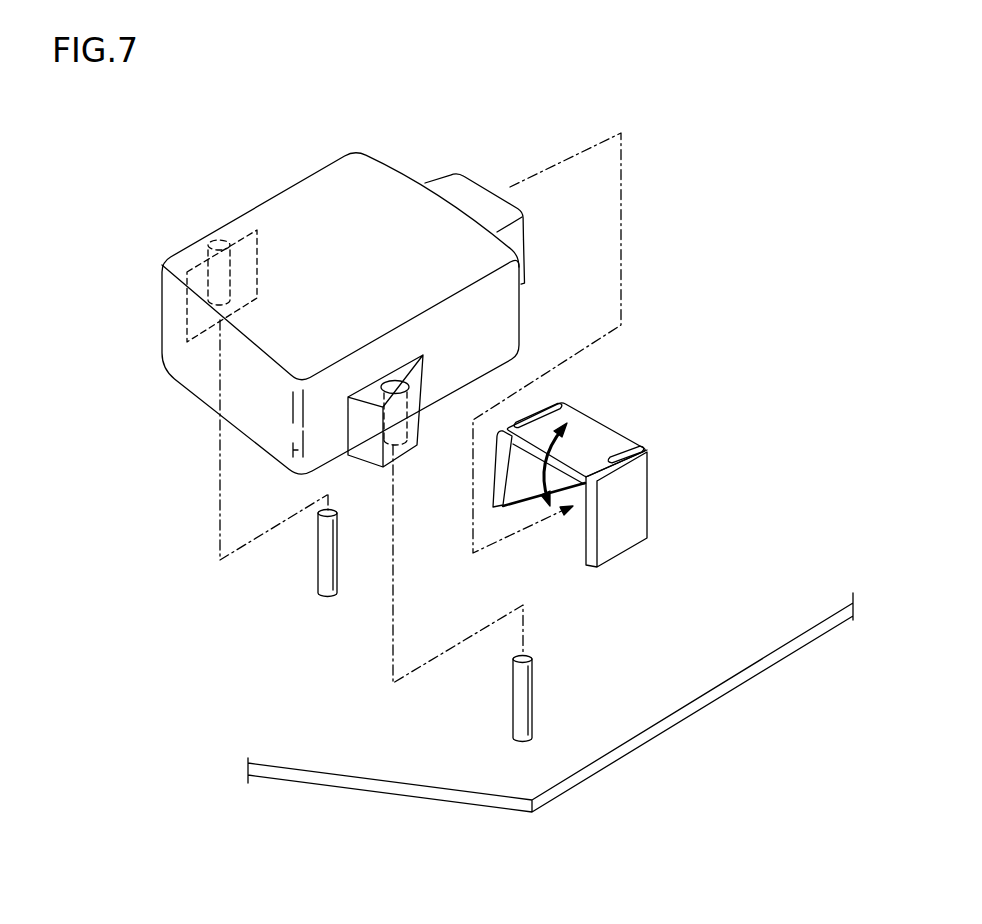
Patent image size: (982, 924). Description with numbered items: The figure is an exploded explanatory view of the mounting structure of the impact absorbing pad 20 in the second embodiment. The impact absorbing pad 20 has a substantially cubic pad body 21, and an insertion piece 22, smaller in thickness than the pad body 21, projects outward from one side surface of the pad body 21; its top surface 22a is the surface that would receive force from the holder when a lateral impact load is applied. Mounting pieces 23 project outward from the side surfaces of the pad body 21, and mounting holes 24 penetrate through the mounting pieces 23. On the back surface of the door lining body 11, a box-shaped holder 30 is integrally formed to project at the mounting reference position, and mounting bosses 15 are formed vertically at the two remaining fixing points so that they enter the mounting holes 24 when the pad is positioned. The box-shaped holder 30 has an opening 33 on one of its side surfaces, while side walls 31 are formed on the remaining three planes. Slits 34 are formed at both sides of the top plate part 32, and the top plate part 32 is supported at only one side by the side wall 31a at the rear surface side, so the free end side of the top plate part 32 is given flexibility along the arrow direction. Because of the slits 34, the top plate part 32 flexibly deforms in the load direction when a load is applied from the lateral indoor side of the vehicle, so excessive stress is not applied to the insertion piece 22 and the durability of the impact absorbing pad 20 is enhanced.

The door lining body 11 is at (653, 703).
The mounting boss 15 is at (320, 563).
The impact absorbing pad 20 is at (267, 190).
The pad body 21 is at (335, 247).
The insertion piece 22 is at (525, 238).
The top surface 22a is at (474, 190).
The mounting piece 23 is at (191, 270).
The mounting hole 24 is at (218, 240).
The box-shaped holder 30 is at (582, 451).
The side wall 31 is at (497, 477).
The side wall at the rear surface side 31a is at (614, 444).
The top plate part 32 is at (598, 438).
The opening 33 is at (560, 559).
The slit 34 is at (552, 406).